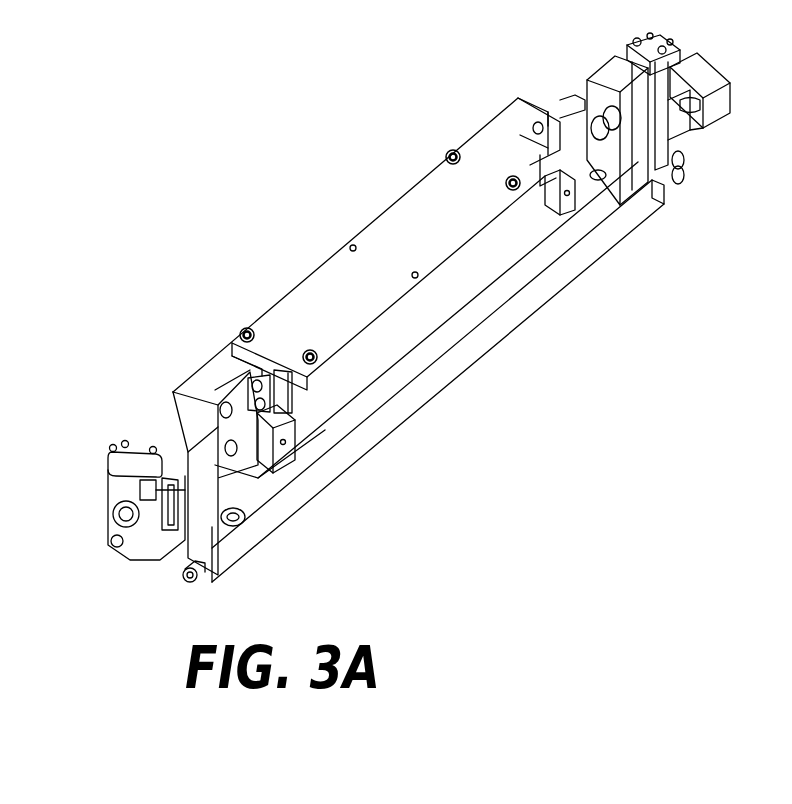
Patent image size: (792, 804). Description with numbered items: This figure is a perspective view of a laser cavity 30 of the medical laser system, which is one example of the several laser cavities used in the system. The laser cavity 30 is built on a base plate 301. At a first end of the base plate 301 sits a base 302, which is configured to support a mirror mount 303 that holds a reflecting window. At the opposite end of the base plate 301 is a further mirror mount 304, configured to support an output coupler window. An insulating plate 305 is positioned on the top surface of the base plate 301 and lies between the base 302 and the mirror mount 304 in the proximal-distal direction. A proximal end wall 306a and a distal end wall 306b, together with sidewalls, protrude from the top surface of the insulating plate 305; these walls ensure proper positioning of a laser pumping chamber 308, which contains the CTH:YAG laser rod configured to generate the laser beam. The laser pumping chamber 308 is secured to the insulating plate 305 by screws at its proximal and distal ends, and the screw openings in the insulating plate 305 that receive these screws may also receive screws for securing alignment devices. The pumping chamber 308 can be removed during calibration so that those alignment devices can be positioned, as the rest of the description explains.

The laser cavity 30 is at (699, 270).
The base plate 301 is at (298, 513).
The base 302 is at (189, 430).
The mirror mount 303 is at (136, 442).
The mirror mount 304 is at (673, 85).
The insulating plate 305 is at (483, 323).
The proximal end wall 306a is at (298, 432).
The distal end wall 306b is at (580, 163).
The laser pumping chamber 308 is at (357, 233).